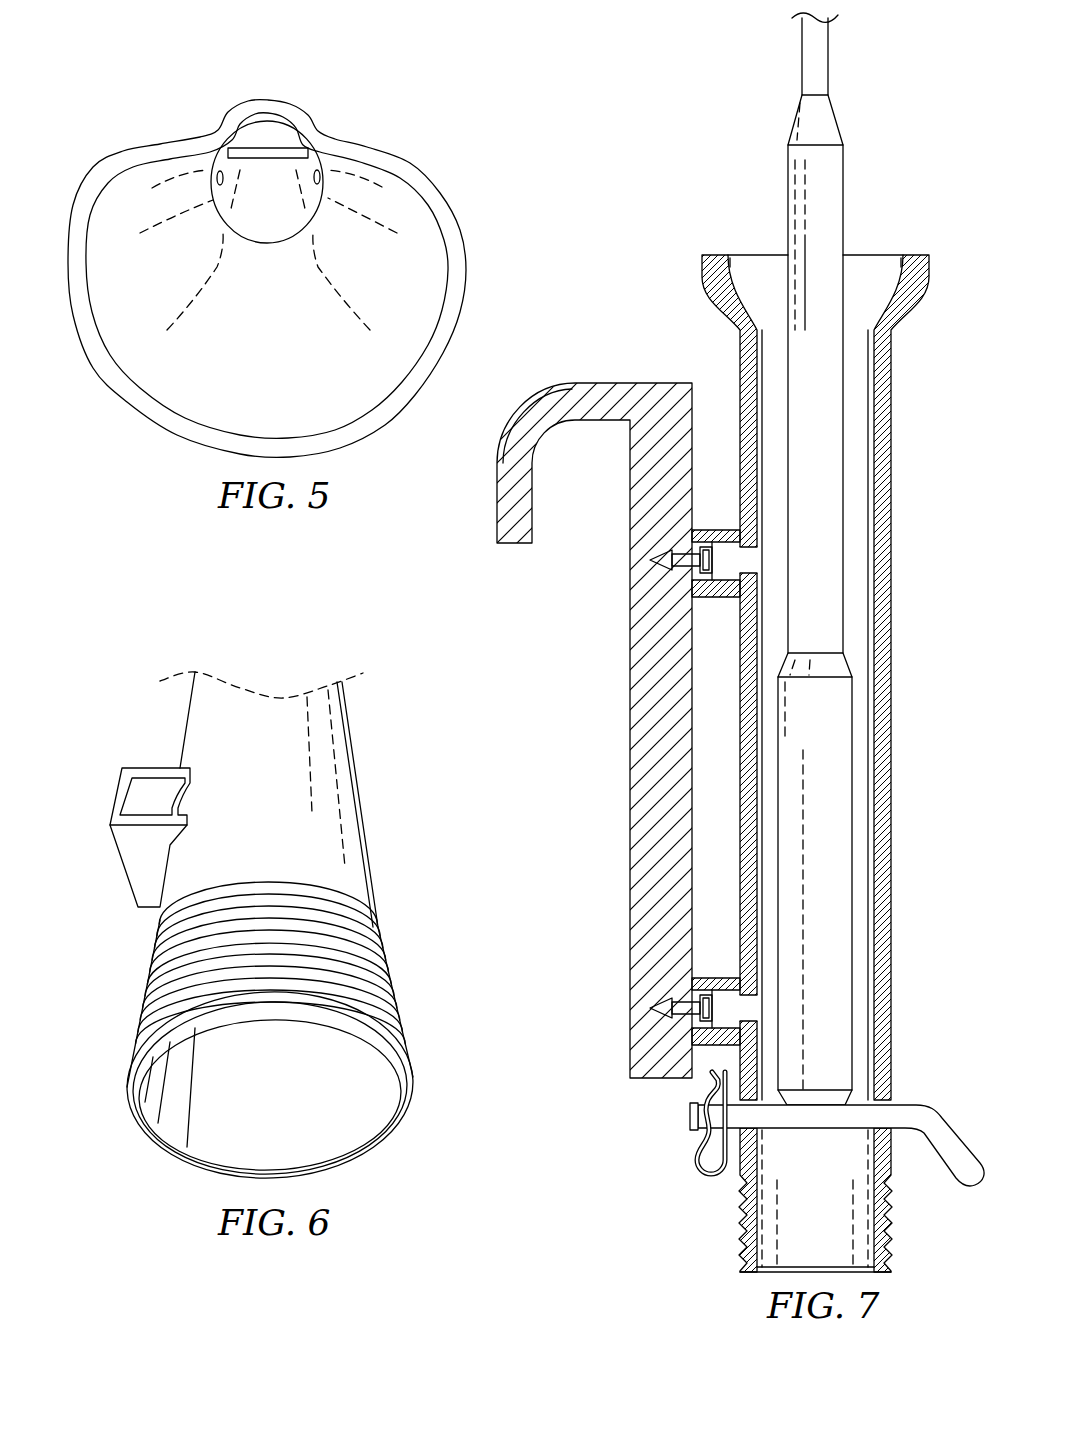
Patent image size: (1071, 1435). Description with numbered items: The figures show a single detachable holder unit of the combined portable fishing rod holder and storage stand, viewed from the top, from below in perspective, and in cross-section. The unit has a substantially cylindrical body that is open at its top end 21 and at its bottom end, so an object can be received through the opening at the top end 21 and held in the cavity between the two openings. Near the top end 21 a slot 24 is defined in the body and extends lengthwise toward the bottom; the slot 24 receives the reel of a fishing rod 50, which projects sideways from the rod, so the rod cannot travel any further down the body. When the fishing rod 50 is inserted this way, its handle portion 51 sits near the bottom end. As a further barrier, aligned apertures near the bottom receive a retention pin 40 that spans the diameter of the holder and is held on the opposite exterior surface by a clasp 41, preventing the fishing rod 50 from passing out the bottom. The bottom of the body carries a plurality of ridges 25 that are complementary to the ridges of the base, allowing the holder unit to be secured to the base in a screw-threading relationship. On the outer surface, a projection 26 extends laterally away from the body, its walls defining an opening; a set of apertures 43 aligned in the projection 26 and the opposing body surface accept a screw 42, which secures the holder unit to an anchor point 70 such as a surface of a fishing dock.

In FIG. 5, the top end 21 is at (467, 290).
In FIG. 5, the slot 24 is at (254, 191).
In FIG. 5, the retention pin 40 is at (272, 146).
In FIG. 7, the retention pin 40 is at (930, 1105).
In FIG. 6, the ridges 25 is at (373, 968).
In FIG. 6, the projection 26 is at (130, 768).
In FIG. 7, the projection 26 is at (713, 530).
In FIG. 7, the clasp 41 is at (697, 1160).
In FIG. 7, the screw 42 is at (655, 572).
In FIG. 7, the apertures 43 is at (893, 562).
In FIG. 7, the fishing rod 50 is at (830, 77).
In FIG. 7, the handle portion 51 is at (830, 804).
In FIG. 7, the anchor point 70 is at (610, 383).